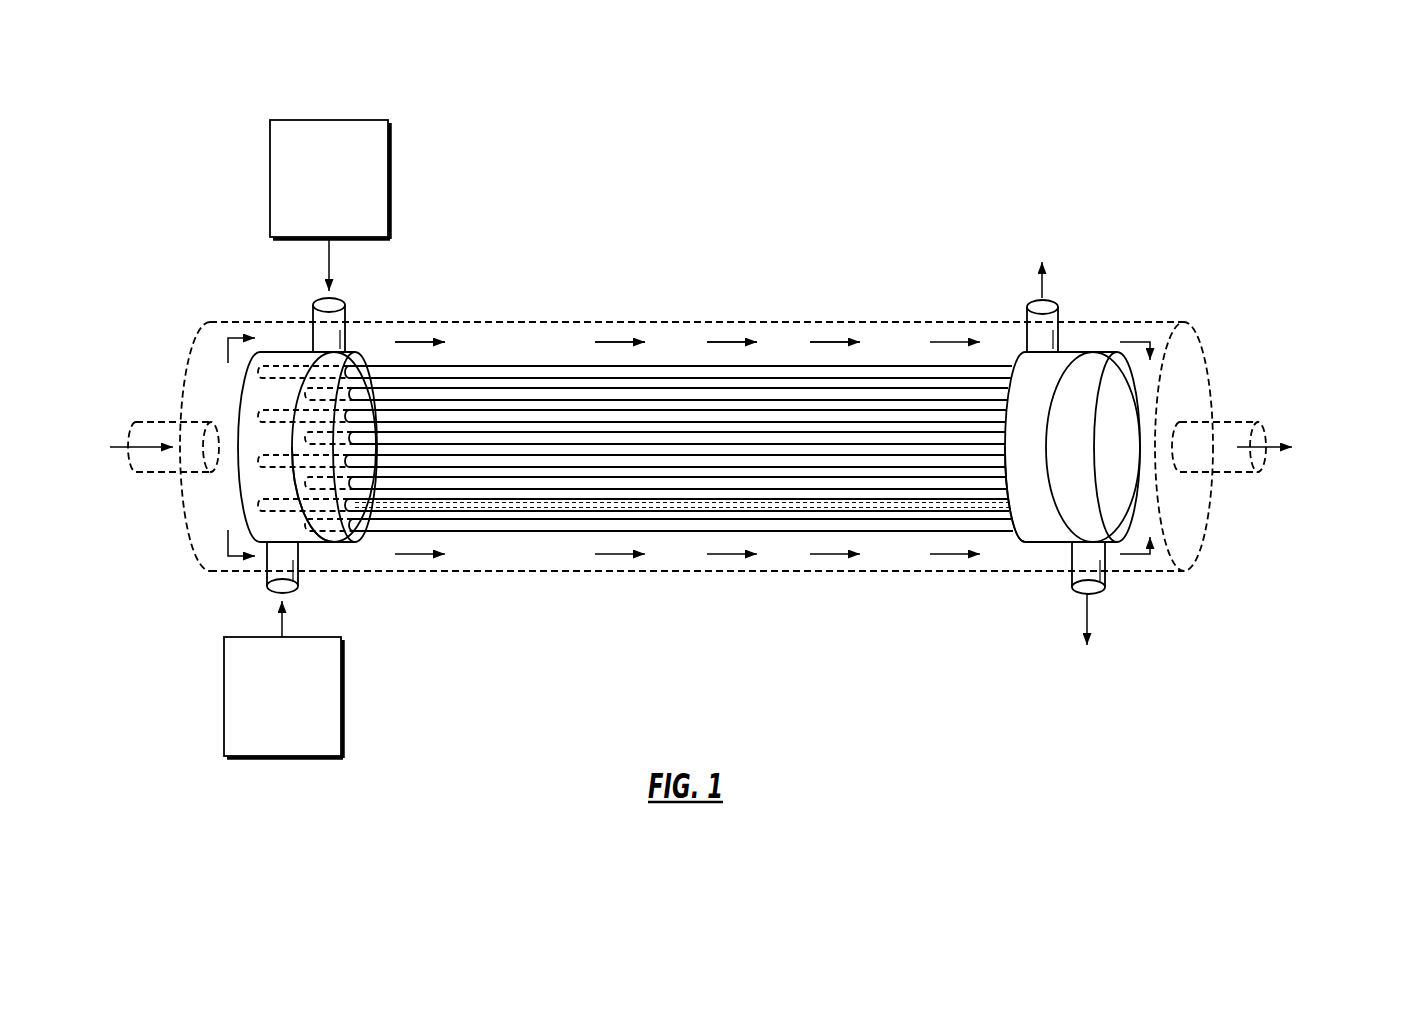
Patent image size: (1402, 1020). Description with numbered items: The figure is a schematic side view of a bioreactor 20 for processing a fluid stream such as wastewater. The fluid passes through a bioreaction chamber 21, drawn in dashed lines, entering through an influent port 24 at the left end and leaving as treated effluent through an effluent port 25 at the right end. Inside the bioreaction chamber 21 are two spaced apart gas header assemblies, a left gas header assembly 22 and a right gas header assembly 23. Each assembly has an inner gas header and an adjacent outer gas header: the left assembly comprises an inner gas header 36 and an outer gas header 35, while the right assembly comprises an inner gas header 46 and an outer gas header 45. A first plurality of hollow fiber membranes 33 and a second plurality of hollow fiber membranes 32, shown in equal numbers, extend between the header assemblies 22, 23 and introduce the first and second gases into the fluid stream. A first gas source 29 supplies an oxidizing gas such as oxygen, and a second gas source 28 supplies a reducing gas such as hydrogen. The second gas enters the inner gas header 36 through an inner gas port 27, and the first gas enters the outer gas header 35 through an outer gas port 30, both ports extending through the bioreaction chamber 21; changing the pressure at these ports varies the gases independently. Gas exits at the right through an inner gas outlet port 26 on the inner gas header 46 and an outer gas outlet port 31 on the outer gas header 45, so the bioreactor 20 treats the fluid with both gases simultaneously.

The bioreactor 20 is at (967, 172).
The bioreaction chamber 21 is at (518, 322).
The left gas header assembly 22 is at (216, 396).
The right gas header assembly 23 is at (1137, 502).
The influent port 24 is at (157, 457).
The effluent port 25 is at (1225, 423).
The inner gas outlet port 26 is at (1048, 325).
The inner gas port 27 is at (322, 305).
The second gas source 28 is at (317, 118).
The first gas source 29 is at (291, 750).
The outer gas port 30 is at (276, 564).
The outer gas outlet port 31 is at (1093, 560).
The second plurality of hollow fiber membranes 32 is at (763, 437).
The first plurality of hollow fiber membranes 33 is at (665, 372).
The outer gas header 35 is at (273, 368).
The inner gas header 36 is at (325, 543).
The outer gas header 45 is at (1093, 360).
The inner gas header 46 is at (1025, 372).